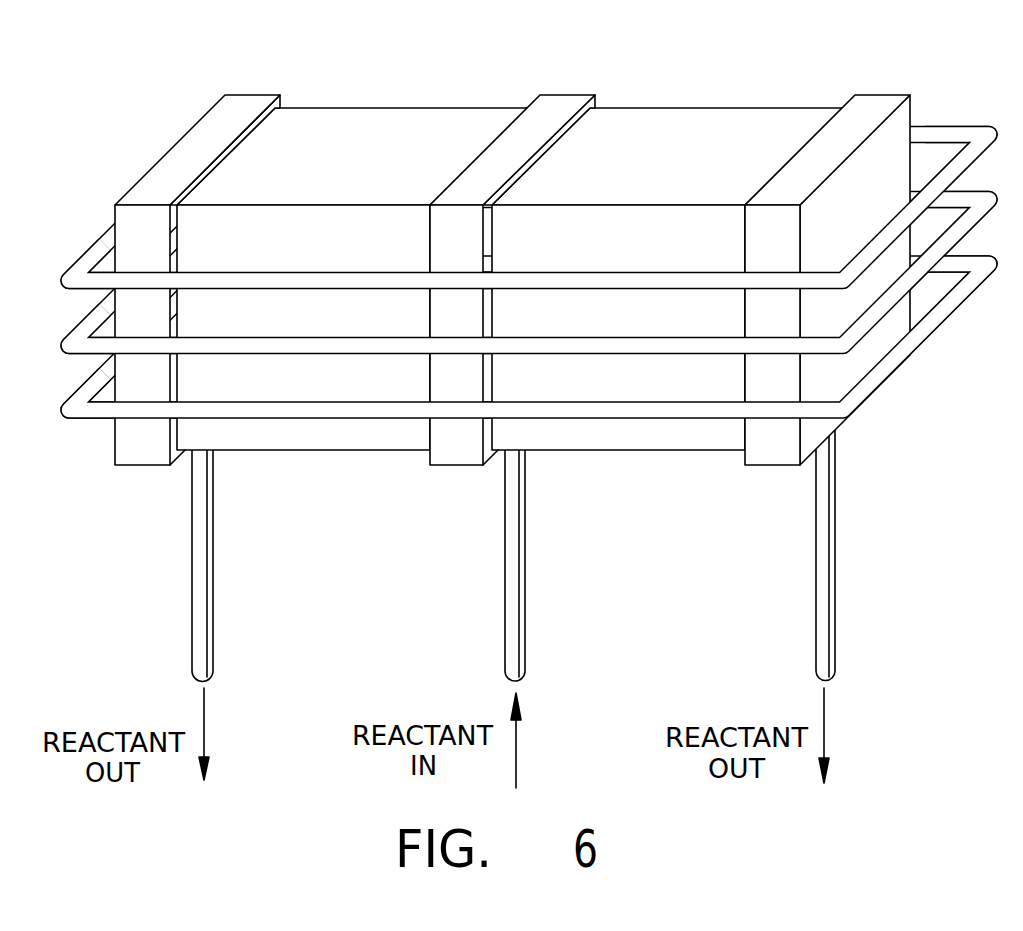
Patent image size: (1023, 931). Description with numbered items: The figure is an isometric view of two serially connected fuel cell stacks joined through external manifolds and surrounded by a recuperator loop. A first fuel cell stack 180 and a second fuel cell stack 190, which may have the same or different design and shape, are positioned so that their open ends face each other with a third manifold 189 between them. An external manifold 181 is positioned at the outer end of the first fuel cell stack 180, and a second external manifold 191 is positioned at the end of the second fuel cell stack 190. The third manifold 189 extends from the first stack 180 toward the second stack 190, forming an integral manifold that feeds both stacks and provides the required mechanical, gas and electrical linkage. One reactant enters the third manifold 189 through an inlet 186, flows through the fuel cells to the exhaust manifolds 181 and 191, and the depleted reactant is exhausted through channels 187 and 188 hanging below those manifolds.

The first fuel cell stack 180 is at (350, 140).
The external manifold 181 is at (212, 138).
The inlet 186 is at (505, 620).
The exhaust channel 187 is at (192, 620).
The exhaust channel 188 is at (816, 599).
The third manifold 189 is at (558, 105).
The second fuel cell stack 190 is at (665, 142).
The second external manifold 191 is at (873, 107).